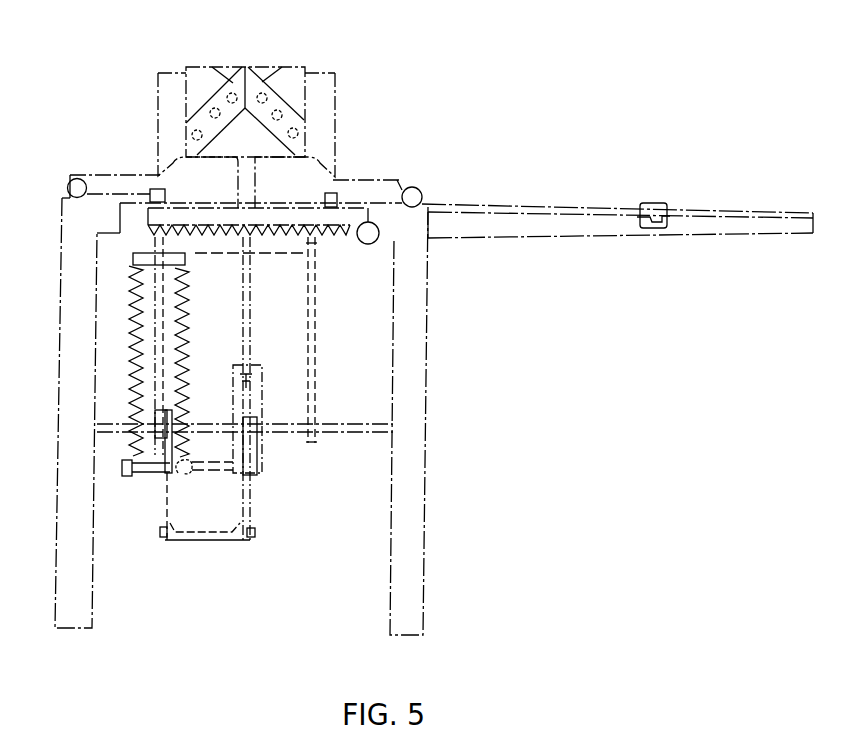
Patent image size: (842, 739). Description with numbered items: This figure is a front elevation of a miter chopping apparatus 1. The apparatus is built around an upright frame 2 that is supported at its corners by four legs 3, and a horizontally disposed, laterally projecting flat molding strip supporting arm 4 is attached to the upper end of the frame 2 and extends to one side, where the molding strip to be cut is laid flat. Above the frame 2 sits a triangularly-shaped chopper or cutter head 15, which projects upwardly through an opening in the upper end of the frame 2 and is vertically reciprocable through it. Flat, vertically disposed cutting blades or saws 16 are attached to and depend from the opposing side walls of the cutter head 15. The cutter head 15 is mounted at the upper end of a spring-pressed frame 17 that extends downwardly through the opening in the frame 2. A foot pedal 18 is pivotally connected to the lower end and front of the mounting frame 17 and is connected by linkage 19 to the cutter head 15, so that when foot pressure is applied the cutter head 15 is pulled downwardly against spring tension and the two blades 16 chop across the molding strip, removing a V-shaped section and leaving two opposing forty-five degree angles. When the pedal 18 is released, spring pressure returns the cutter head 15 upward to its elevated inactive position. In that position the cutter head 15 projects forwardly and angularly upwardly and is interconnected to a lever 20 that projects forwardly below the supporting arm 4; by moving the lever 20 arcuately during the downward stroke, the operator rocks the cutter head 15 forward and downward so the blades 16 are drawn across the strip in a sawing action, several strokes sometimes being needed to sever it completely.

The apparatus 1 is at (437, 98).
The upright frame 2 is at (428, 330).
The legs 3 is at (430, 520).
The molding strip supporting arm 4 is at (730, 225).
The cutter head 15 is at (283, 83).
The cutting blades 16 is at (232, 82).
The spring-pressed frame 17 is at (125, 307).
The foot pedal 18 is at (205, 542).
The linkage 19 is at (262, 410).
The lever 20 is at (380, 240).